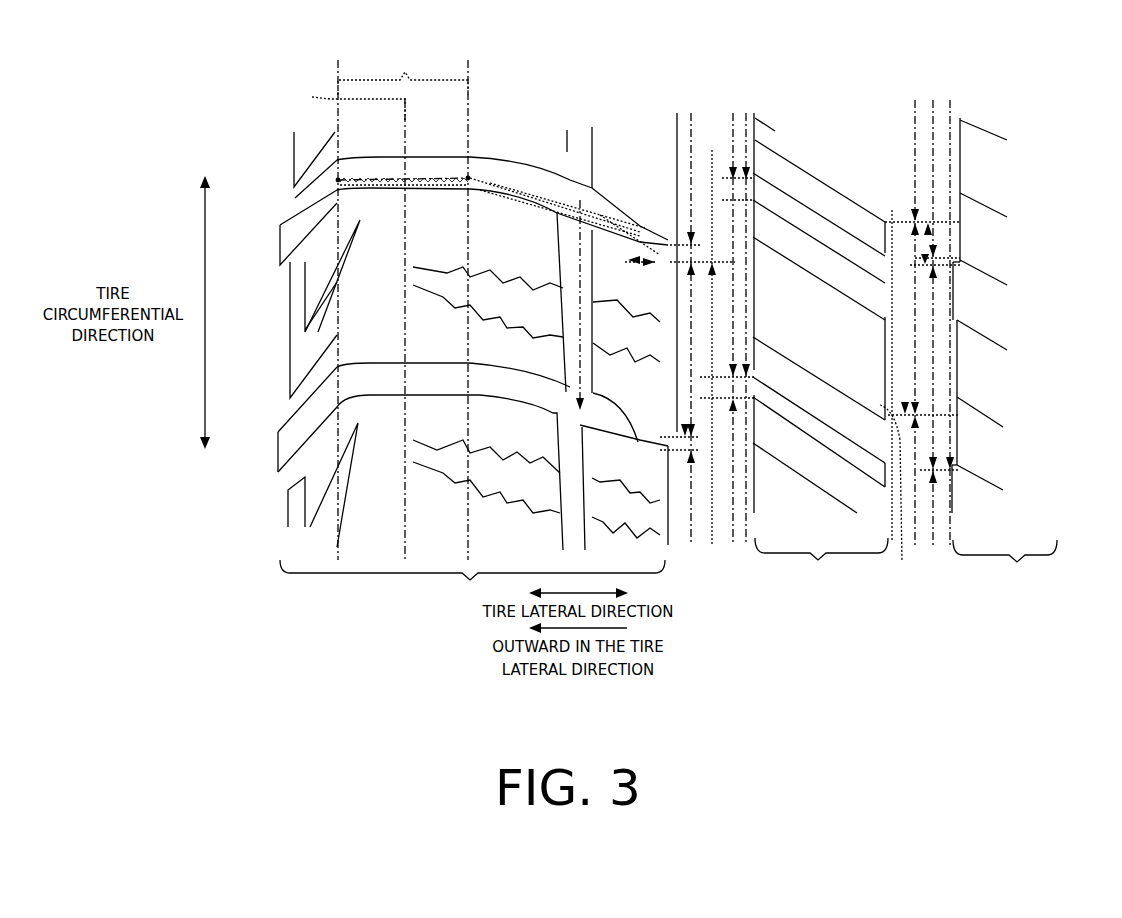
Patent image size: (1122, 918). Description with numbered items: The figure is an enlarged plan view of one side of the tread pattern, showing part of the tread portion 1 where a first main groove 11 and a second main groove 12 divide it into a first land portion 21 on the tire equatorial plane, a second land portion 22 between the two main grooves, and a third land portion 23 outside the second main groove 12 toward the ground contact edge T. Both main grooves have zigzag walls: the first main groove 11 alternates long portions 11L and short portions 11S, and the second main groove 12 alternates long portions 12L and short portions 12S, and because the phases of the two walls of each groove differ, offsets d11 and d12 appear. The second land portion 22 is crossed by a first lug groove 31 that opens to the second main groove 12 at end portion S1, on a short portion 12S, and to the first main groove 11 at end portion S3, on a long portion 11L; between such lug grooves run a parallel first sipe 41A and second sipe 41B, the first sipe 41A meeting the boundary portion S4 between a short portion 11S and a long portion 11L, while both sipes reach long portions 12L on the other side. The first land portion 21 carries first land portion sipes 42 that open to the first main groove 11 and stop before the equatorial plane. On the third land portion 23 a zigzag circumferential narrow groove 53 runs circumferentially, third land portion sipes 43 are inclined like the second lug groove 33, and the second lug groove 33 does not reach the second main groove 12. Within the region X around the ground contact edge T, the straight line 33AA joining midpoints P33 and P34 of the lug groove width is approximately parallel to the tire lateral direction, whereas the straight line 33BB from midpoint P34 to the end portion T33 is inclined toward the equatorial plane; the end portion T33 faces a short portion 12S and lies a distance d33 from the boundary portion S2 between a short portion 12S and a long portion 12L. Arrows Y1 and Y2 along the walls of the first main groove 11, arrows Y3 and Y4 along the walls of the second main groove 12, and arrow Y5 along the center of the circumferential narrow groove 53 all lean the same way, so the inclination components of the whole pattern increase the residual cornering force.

The tread portion 1 is at (1036, 140).
The first main groove 11 is at (915, 170).
The long portion 11L is at (915, 140).
The short portion 11S is at (915, 205).
The second main groove 12 is at (693, 130).
The long portion 12L is at (678, 113).
The short portion 12S is at (674, 230).
The first land portion 21 is at (1004, 350).
The second land portion 22 is at (823, 396).
The third land portion 23 is at (472, 581).
The first lug groove 31 is at (830, 250).
The second lug groove 33 is at (420, 157).
The straight line 33AA is at (385, 178).
The straight line 33BB is at (520, 198).
The first sipe 41A is at (795, 230).
The second sipe 41B is at (790, 240).
The first land portion sipe 42 is at (962, 120).
The third land portion sipe 43 is at (594, 310).
The circumferential narrow groove 53 is at (590, 125).
The tire ground contact edge T is at (349, 104).
The region X is at (403, 74).
The midpoint P33 is at (336, 181).
The midpoint P34 is at (469, 178).
The end portion T33 is at (650, 225).
The end portion S1 is at (742, 160).
The boundary portion S2 is at (665, 220).
The end portion S3 is at (888, 262).
The boundary portion S4 is at (915, 230).
The distance d11 is at (933, 250).
The distance d12 is at (726, 255).
The distance d33 is at (645, 262).
The arrow Y1 is at (960, 358).
The arrow Y2 is at (886, 414).
The arrow Y3 is at (756, 270).
The arrow Y4 is at (672, 328).
The arrow Y5 is at (578, 318).